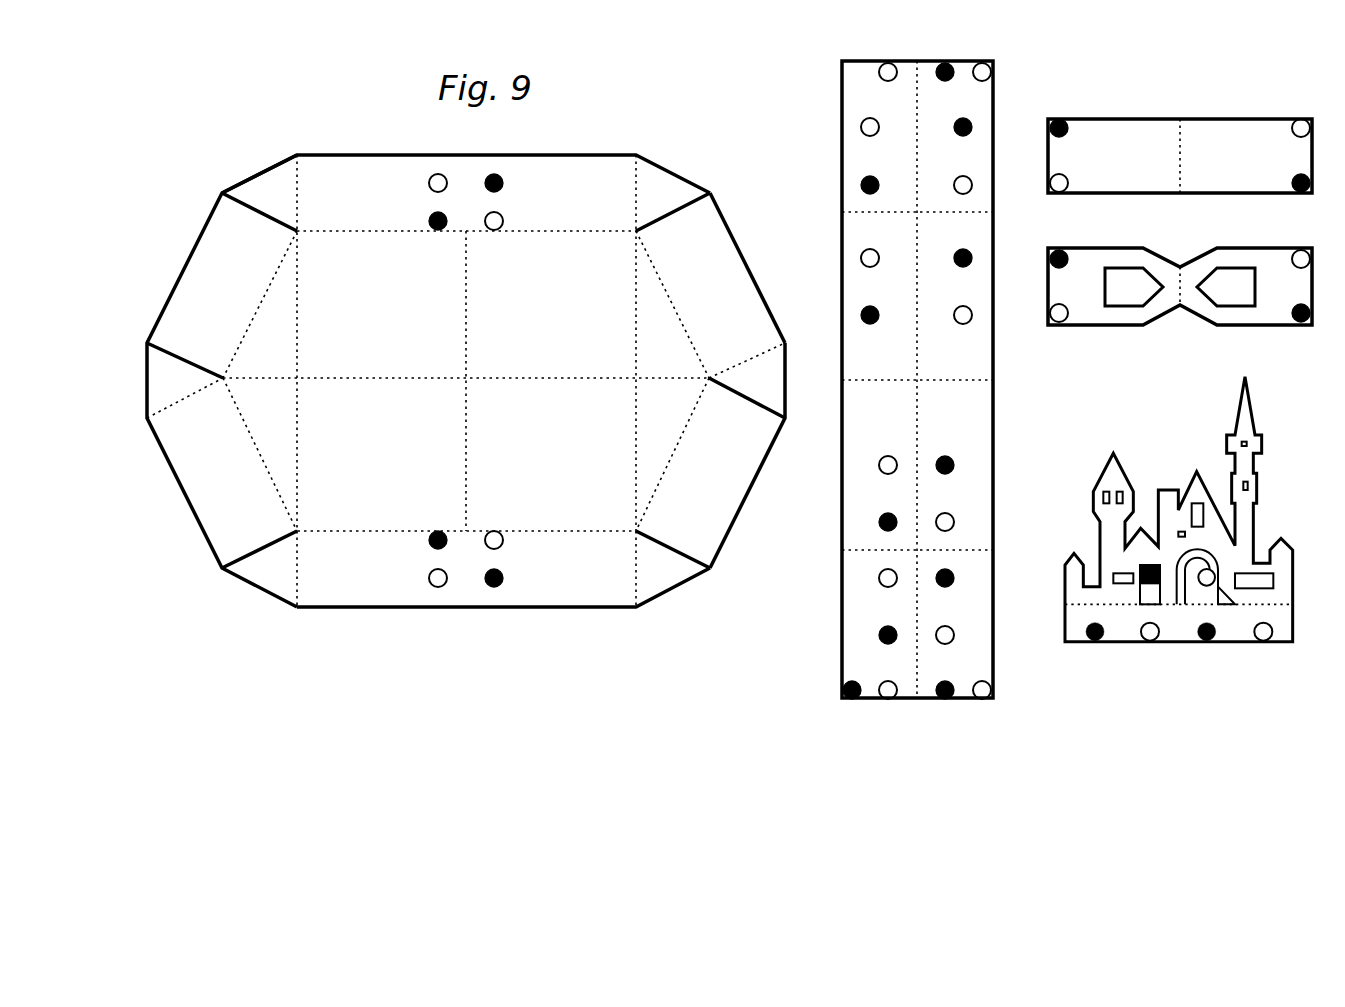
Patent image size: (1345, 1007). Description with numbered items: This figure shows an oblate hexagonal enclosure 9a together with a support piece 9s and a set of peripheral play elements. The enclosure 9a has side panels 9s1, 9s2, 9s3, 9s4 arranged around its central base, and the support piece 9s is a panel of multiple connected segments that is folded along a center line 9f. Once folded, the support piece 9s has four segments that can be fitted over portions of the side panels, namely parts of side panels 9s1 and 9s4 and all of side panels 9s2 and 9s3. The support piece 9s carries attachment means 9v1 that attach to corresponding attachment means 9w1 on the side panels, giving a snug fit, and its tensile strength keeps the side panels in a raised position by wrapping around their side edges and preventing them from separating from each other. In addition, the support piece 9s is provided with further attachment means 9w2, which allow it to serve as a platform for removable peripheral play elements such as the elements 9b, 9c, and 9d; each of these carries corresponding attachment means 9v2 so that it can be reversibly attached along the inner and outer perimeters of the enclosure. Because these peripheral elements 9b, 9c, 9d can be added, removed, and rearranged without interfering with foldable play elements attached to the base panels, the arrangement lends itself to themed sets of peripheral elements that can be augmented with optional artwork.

The oblate hexagonal enclosure 9a is at (466, 381).
The side panel 9s1 is at (466, 193).
The side panel 9s2 is at (710, 285).
The side panel 9s3 is at (710, 455).
The side panel 9s4 is at (503, 569).
The attachment means 9w1 is at (503, 549).
The attachment means 9w2 is at (862, 258).
The attachment means 9v1 is at (845, 690).
The attachment means 9v2 is at (1047, 118).
The support piece 9s is at (889, 380).
The fold 9f is at (916, 702).
The peripheral play element 9b is at (1180, 130).
The peripheral play element 9c is at (1180, 315).
The peripheral play element 9d is at (1179, 529).